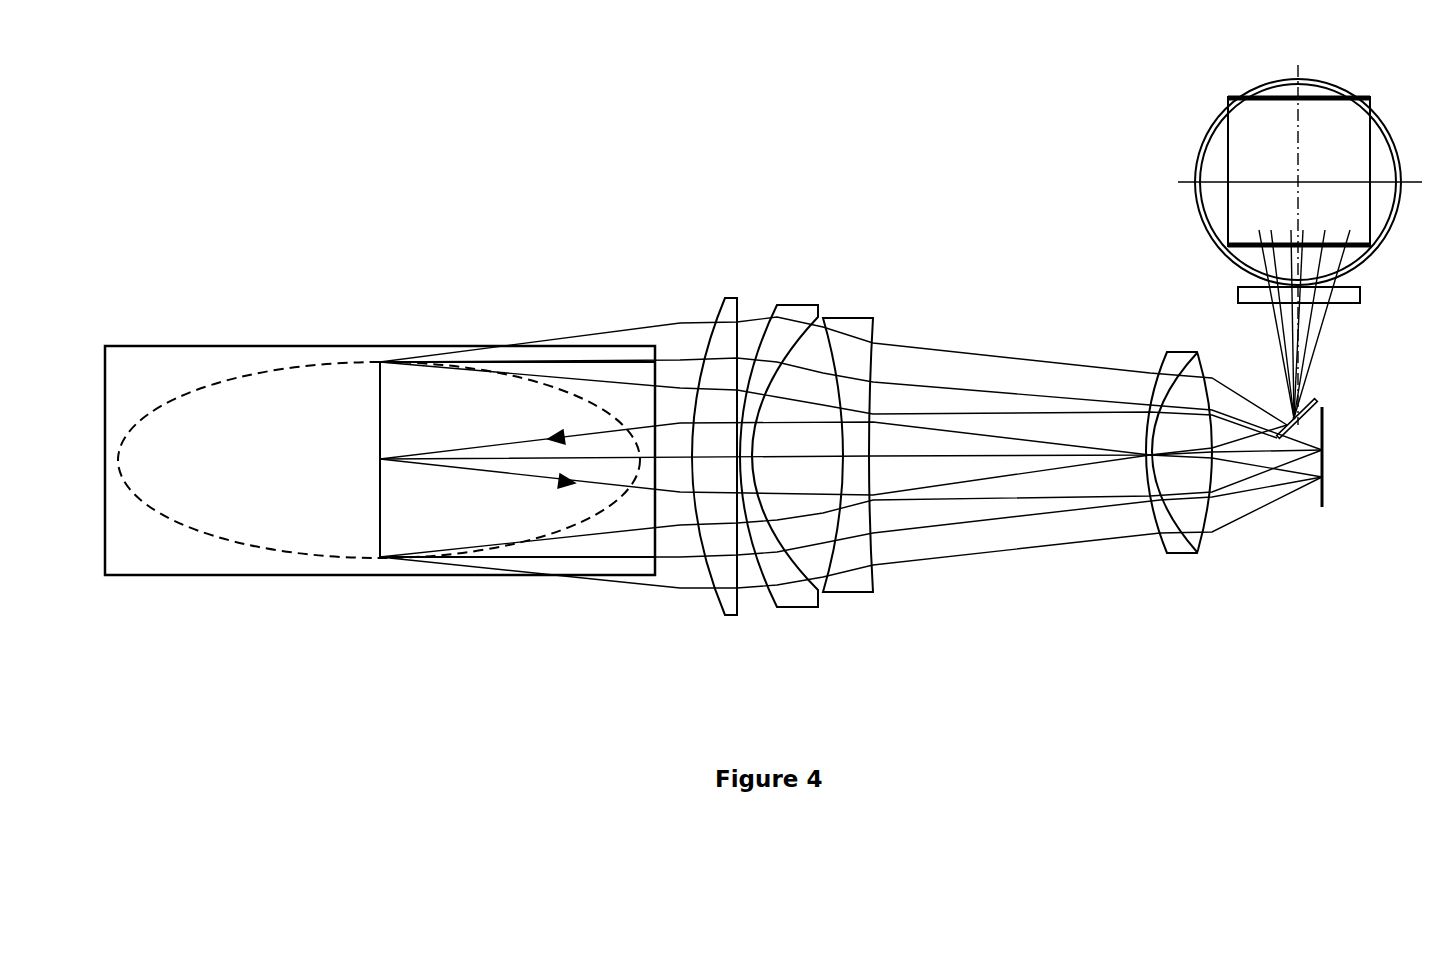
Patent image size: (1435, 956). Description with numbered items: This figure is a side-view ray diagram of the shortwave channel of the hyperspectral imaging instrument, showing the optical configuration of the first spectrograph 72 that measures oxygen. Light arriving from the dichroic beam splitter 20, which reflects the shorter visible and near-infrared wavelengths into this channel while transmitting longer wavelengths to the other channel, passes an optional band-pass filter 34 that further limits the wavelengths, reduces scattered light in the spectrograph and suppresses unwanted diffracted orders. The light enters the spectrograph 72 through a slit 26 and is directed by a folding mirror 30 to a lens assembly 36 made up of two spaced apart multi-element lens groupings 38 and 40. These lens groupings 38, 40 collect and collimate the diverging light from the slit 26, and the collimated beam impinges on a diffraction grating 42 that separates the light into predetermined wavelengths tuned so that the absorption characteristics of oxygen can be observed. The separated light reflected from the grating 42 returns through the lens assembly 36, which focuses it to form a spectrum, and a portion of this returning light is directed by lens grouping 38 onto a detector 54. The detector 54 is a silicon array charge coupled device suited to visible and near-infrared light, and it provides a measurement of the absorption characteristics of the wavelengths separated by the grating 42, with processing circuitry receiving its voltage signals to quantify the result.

The dichroic beam splitter 20 is at (1197, 151).
The band-pass filter 34 is at (1238, 298).
The slit 26 is at (1290, 417).
The folding mirror 30 is at (1317, 402).
The detector 54 is at (1327, 493).
The multi-element lens grouping 38 is at (1218, 570).
The multi-element lens grouping 40 is at (893, 618).
The lens assembly 36 is at (1215, 668).
The diffraction grating 42 is at (288, 575).
The first spectrograph 72 is at (566, 671).